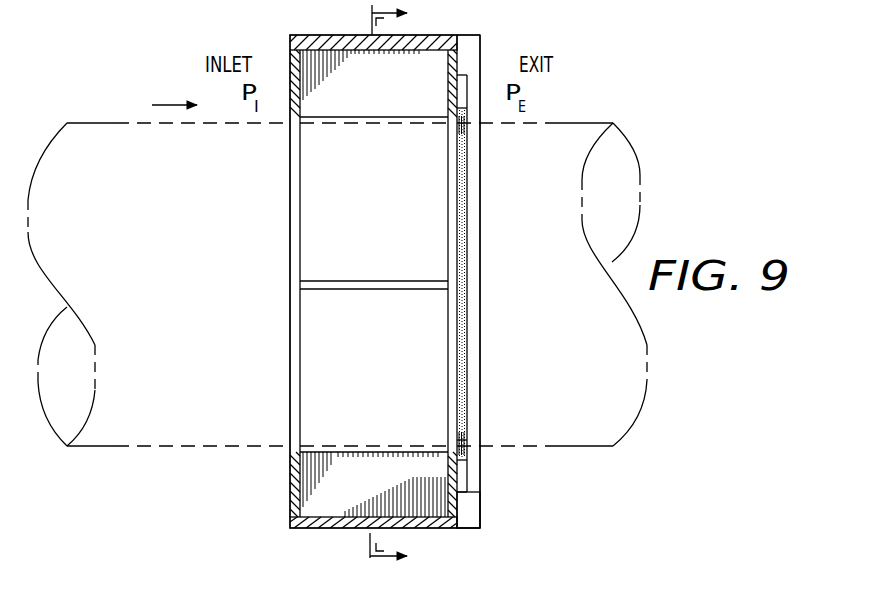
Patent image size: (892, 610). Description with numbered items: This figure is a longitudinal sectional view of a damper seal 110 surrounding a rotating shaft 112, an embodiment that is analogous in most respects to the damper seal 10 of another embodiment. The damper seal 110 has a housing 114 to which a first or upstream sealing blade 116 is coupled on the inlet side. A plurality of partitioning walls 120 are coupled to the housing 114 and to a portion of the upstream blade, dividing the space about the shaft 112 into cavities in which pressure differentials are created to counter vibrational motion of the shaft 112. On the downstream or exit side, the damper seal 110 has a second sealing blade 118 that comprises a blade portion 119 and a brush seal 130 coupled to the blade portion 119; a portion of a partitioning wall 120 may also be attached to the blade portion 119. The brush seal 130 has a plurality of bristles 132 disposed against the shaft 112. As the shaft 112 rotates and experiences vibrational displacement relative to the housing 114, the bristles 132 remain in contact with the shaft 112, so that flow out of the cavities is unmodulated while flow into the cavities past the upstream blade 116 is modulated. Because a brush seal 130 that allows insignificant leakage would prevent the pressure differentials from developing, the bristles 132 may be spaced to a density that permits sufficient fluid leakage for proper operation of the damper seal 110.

The damper seal 10 is at (406, 284).
The damper seal 110 is at (262, 518).
The shaft 112 is at (117, 447).
The housing 114 is at (326, 529).
The first or upstream sealing blade 116 is at (290, 476).
The second sealing blade 118 is at (493, 468).
The blade portion 119 is at (470, 506).
The partitioning walls 120 is at (394, 102).
The brush seal 130 is at (455, 366).
The bristles 132 is at (470, 442).